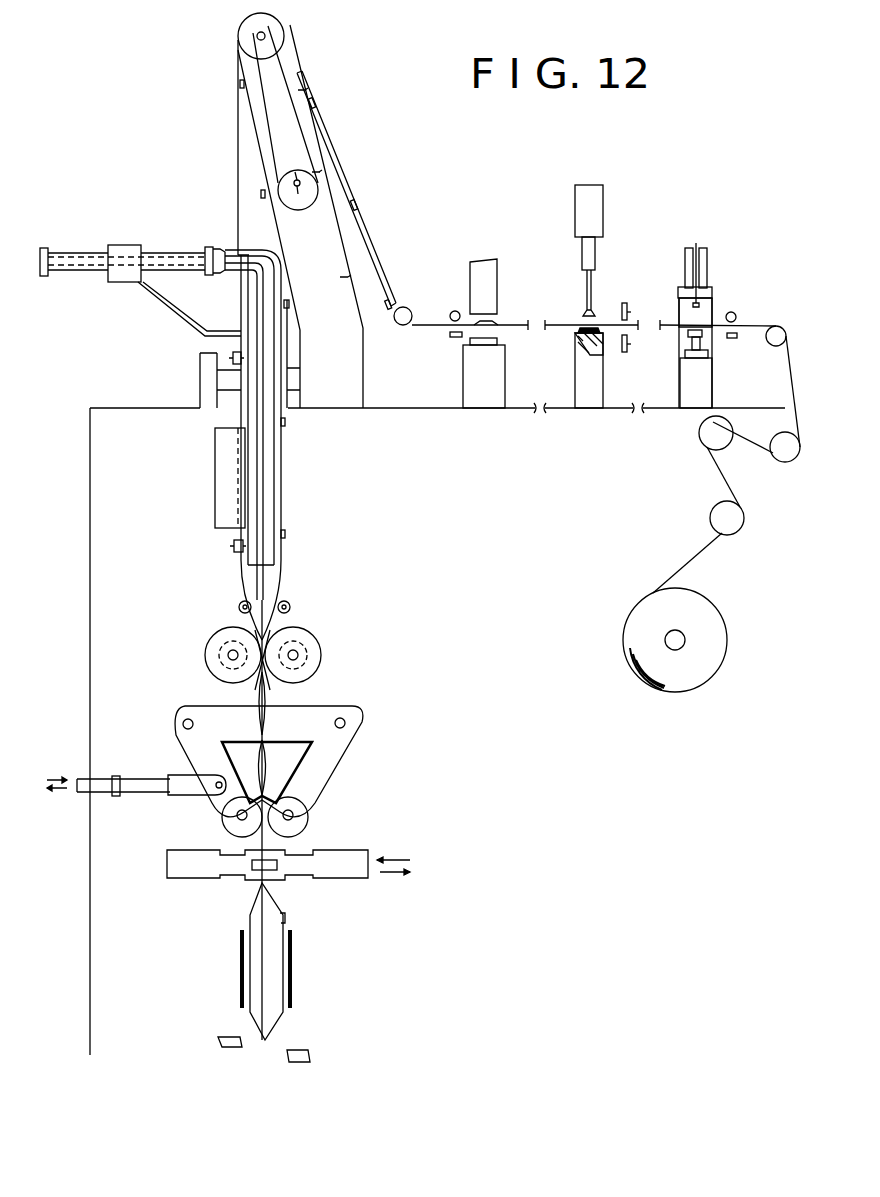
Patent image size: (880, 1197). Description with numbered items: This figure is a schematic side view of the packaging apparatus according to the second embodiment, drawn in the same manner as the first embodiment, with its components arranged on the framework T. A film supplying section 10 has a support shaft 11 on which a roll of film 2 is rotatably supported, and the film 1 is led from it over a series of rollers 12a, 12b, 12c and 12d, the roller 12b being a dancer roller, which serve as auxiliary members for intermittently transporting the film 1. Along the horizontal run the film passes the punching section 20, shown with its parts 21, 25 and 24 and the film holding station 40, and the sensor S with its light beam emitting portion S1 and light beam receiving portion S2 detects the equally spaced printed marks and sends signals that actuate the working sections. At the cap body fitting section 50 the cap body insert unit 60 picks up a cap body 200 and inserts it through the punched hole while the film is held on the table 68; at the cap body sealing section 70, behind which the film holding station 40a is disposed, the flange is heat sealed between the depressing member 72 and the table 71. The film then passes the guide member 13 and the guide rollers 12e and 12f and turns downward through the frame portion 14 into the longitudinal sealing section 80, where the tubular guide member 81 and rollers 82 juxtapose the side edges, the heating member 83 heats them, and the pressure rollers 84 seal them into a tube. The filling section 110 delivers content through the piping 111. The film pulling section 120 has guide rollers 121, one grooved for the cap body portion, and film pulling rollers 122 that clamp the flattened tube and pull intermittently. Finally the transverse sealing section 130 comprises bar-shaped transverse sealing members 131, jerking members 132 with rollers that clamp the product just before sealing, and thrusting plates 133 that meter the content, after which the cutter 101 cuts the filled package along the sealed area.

The guide roller 12f is at (284, 30).
The guide member 13 is at (356, 192).
The frame 14 is at (318, 316).
The guide roller 12e is at (401, 326).
The filling section 110 is at (130, 245).
The piping 111 is at (214, 338).
The longitudinal sealing section 80 is at (292, 469).
The tubular guide member 81 is at (276, 498).
The rollers 82 is at (232, 362).
The heating member 83 is at (215, 468).
The pressure rollers 84 is at (238, 556).
The framework T is at (84, 458).
The guide rollers 121 is at (240, 610).
The film pulling section 120 is at (294, 622).
The film pulling rollers 122 is at (205, 660).
The jerking members 132 is at (186, 746).
The transverse sealing section 130 is at (350, 792).
The transverse sealing members 131 is at (195, 880).
The thrusting plates 133 is at (240, 975).
The cutter 101 is at (315, 1056).
The film 1 is at (712, 570).
The film holding station 40a is at (450, 305).
The depressing member 72 is at (489, 262).
The cap body sealing section 70 is at (500, 300).
The table 71 is at (465, 376).
The cap body 200 is at (500, 328).
The cap body insert unit 60 is at (603, 214).
The cap body fitting section 50 is at (565, 218).
The table 68 is at (607, 366).
The sensor S is at (632, 306).
The light beam emitting portion S1 is at (633, 310).
The light beam receiving portion S2 is at (631, 343).
The punching section 20 is at (755, 243).
The cylinder 21 is at (710, 258).
The holder 25 is at (715, 298).
The support 24 is at (713, 360).
The film holding station 40 is at (745, 316).
The roller 12d is at (771, 346).
The dancer roller 12b is at (722, 440).
The roller 12c is at (783, 458).
The roller 12a is at (712, 520).
The roll of film 2 is at (727, 645).
The film supplying section 10 is at (626, 605).
The support shaft 11 is at (678, 652).